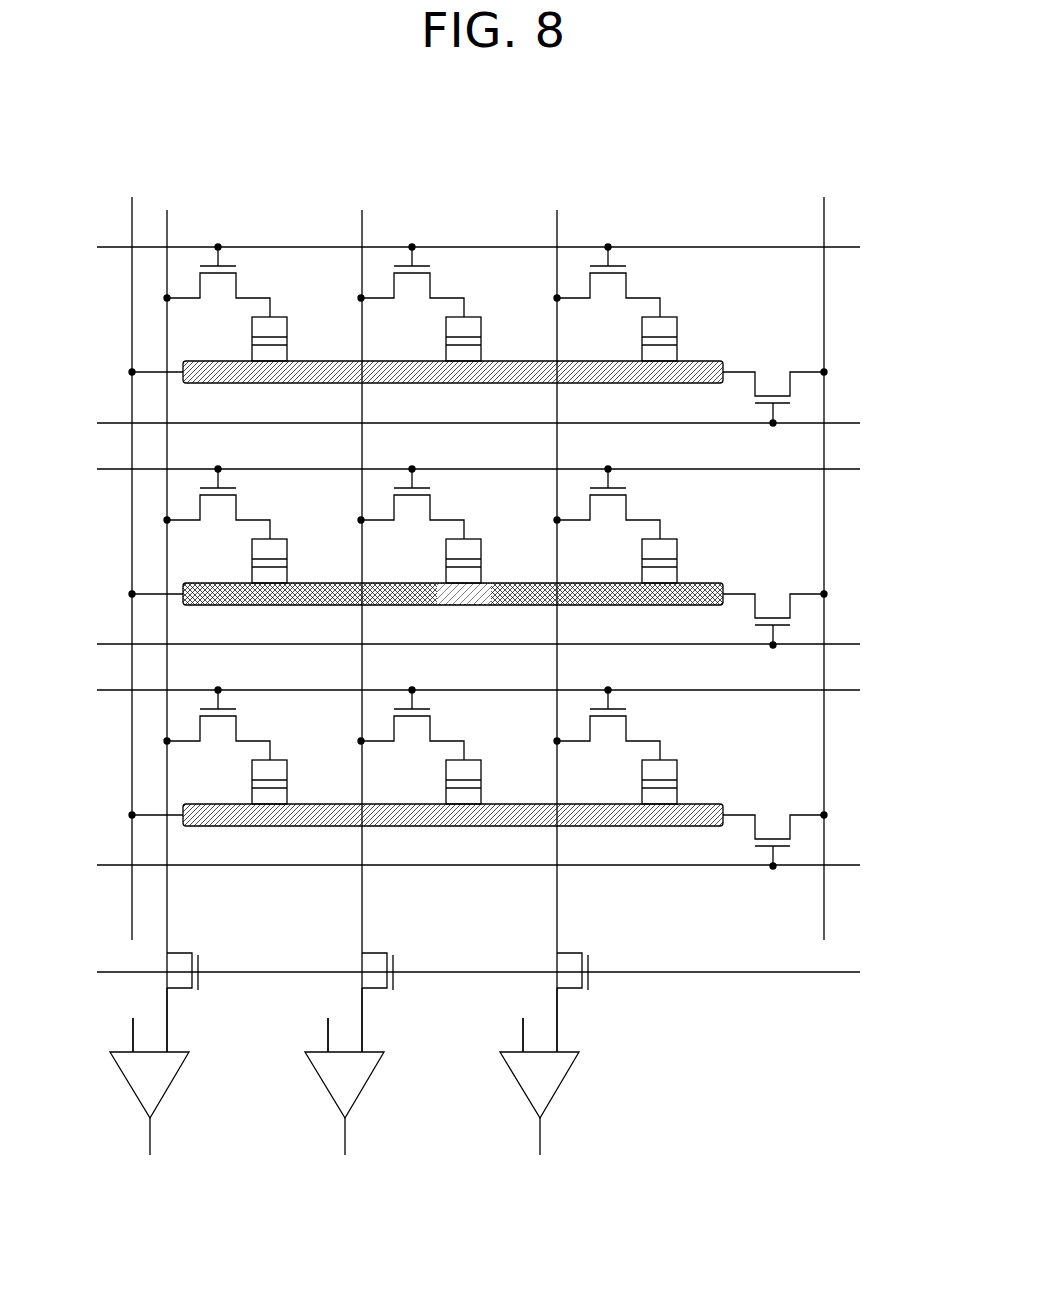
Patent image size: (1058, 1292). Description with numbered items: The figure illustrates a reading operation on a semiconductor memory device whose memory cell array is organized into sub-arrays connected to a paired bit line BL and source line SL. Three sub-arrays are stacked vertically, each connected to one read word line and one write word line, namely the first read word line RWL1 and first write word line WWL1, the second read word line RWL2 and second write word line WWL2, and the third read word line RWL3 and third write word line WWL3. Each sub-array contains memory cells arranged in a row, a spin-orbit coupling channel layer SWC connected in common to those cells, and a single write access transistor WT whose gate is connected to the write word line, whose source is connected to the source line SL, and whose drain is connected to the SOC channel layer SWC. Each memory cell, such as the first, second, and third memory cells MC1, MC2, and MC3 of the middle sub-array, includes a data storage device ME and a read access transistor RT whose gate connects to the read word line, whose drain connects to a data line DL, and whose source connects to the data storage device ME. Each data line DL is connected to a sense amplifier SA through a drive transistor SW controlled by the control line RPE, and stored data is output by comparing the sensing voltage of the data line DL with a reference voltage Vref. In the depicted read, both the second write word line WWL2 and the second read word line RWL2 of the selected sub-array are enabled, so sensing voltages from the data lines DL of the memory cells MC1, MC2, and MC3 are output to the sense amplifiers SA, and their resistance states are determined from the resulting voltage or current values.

The bit line BL is at (124, 538).
The source line SL is at (816, 538).
The first read word line RWL1 is at (511, 248).
The first write word line WWL1 is at (514, 424).
The second read word line RWL2 is at (525, 470).
The second write word line WWL2 is at (529, 645).
The third read word line RWL3 is at (511, 691).
The third write word line WWL3 is at (514, 866).
The control line RPE is at (516, 973).
The read access transistor RT is at (216, 284).
The data storage device ME is at (276, 316).
The spin-orbit coupling channel layer SWC is at (509, 360).
The write access transistor WT is at (771, 390).
The first memory cell MC1 is at (273, 537).
The second memory cell MC2 is at (468, 537).
The third memory cell MC3 is at (663, 537).
The drive transistor SW is at (201, 972).
The data line DL is at (381, 1020).
The reference voltage Vref is at (321, 1020).
The sense amplifier SA is at (140, 1082).